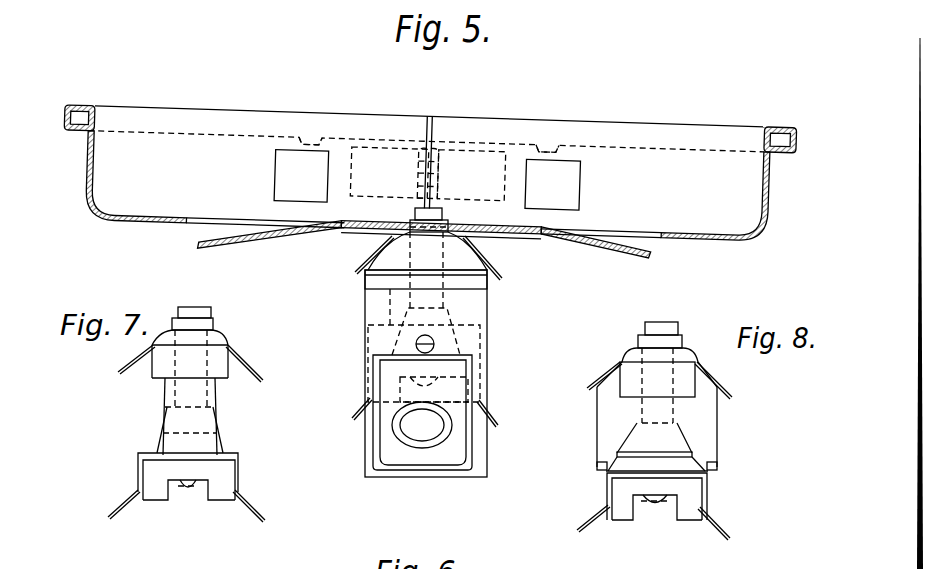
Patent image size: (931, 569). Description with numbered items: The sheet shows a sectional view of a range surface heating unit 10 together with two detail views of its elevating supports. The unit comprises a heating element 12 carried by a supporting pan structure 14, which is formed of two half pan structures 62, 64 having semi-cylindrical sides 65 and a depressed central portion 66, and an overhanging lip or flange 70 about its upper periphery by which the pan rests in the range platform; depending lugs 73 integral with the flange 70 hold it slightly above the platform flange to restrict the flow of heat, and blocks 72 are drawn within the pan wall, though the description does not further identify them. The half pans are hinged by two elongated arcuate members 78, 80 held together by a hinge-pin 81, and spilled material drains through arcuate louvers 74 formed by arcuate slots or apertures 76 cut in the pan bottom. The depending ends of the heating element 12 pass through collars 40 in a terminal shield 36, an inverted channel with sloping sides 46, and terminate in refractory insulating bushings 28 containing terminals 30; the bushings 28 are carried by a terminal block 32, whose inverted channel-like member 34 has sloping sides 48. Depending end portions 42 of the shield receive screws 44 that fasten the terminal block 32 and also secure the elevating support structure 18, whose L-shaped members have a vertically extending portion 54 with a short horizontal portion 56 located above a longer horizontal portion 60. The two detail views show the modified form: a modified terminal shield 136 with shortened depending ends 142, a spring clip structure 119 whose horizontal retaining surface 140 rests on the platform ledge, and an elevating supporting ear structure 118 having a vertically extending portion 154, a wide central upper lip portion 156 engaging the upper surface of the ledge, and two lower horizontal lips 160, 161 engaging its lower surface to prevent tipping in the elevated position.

In FIG. 5, the range surface heating unit 10 is at (490, 117).
In FIG. 7, the heating element 12 is at (210, 313).
In FIG. 8, the heating element 12 is at (676, 324).
In FIG. 5, the supporting pan structure 14 is at (430, 168).
In FIG. 5, the retaining or elevating support structure 18 is at (428, 338).
In FIG. 5, the refractory insulating bushings 28 is at (478, 320).
In FIG. 7, the refractory insulating bushings 28 is at (162, 438).
In FIG. 8, the refractory insulating bushings 28 is at (628, 442).
In FIG. 5, the terminals 30 is at (487, 386).
In FIG. 7, the terminals 30 is at (196, 496).
In FIG. 8, the terminals 30 is at (655, 505).
In FIG. 5, the terminal block 32 is at (377, 424).
In FIG. 7, the terminal block 32 is at (250, 503).
In FIG. 8, the terminal block 32 is at (581, 519).
In FIG. 5, the inverted channel-like member 34 is at (397, 249).
In FIG. 5, the terminal shield 36 is at (474, 260).
In FIG. 5, the collars 40 is at (412, 218).
In FIG. 5, the depending end portions 42 is at (486, 302).
In FIG. 5, the screws 44 is at (417, 345).
In FIG. 5, the outwardly and downwardly sloping sides 46 is at (372, 253).
In FIG. 5, the outwardly and downwardly sloping sides 48 is at (360, 407).
In FIG. 7, the outwardly and downwardly sloping sides 48 is at (118, 509).
In FIG. 8, the outwardly and downwardly sloping sides 48 is at (596, 510).
In FIG. 5, the vertically extending portion 54 is at (376, 278).
In FIG. 5, the horizontally extending portion 56 is at (418, 268).
In FIG. 5, the horizontal portion 60 is at (426, 323).
In FIG. 5, the half pan structure 62 is at (222, 122).
In FIG. 5, the half pan structure 64 is at (612, 137).
In FIG. 5, the semi-cylindrical sides 65 is at (93, 158).
In FIG. 5, the depressed central portion 66 is at (746, 224).
In FIG. 5, the overhanging lip or flange 70 is at (76, 128).
In FIG. 5, the mounting block 72 is at (286, 168).
In FIG. 5, the depending lugs 73 is at (311, 137).
In FIG. 5, the arcuate louvers 74 is at (220, 247).
In FIG. 5, the arcuate slots or apertures 76 is at (227, 222).
In FIG. 5, the elongated arcuate member 78 is at (495, 150).
In FIG. 5, the elongated arcuate member 80 is at (368, 147).
In FIG. 5, the hinge-pin 81 is at (433, 130).
In FIG. 7, the elevating supporting ear structure 118 is at (195, 387).
In FIG. 8, the elevating supporting ear structure 118 is at (655, 404).
In FIG. 7, the elevating supporting spring clip structure 119 is at (213, 400).
In FIG. 7, the modified terminal shield 136 is at (228, 340).
In FIG. 8, the modified terminal shield 136 is at (663, 356).
In FIG. 7, the horizontal retaining surface 140 is at (215, 443).
In FIG. 7, the depending ends 142 is at (222, 372).
In FIG. 8, the depending ends 142 is at (628, 387).
In FIG. 8, the vertically extending portion 154 is at (705, 388).
In FIG. 8, the horizontal upper lip portion 156 is at (697, 453).
In FIG. 8, the lower horizontal lip 160 is at (605, 464).
In FIG. 8, the lower horizontal lip 161 is at (716, 465).